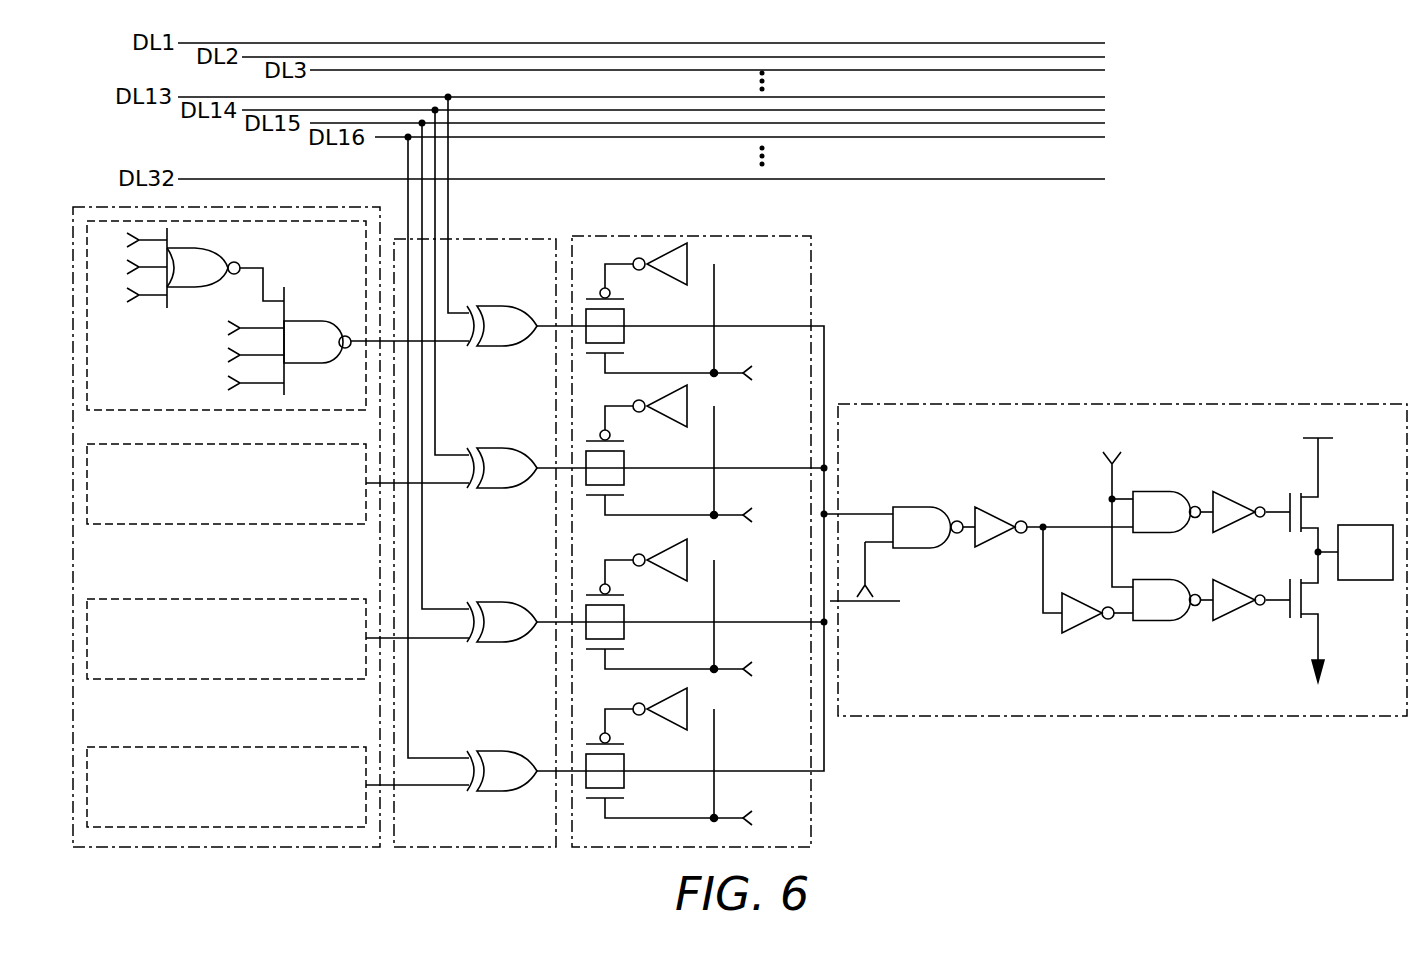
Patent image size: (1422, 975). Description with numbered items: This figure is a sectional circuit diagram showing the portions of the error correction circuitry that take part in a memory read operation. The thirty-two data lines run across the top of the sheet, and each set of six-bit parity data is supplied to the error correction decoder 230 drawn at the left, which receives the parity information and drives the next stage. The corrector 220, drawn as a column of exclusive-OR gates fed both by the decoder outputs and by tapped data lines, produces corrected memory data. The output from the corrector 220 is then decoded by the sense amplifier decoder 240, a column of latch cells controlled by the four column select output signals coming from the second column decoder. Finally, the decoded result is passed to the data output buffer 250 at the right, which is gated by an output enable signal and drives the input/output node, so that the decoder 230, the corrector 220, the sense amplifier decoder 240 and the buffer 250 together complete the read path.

The corrector 220 is at (503, 239).
The error correction decoder 230 is at (97, 207).
The sense amplifier decoder 240 is at (684, 236).
The data output buffer 250 is at (1124, 404).